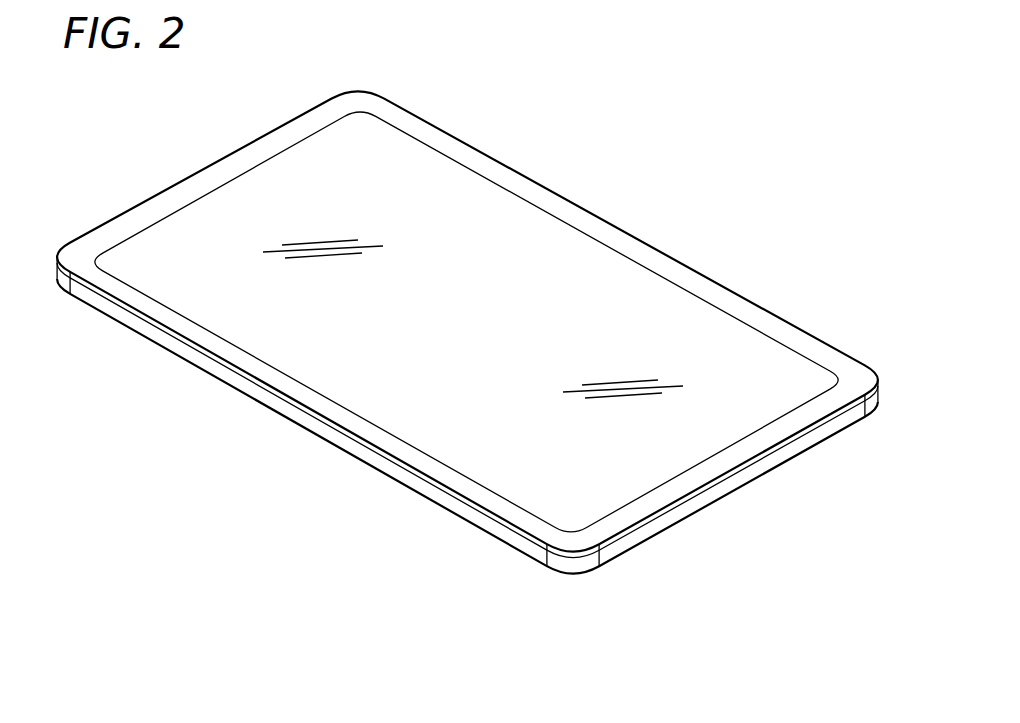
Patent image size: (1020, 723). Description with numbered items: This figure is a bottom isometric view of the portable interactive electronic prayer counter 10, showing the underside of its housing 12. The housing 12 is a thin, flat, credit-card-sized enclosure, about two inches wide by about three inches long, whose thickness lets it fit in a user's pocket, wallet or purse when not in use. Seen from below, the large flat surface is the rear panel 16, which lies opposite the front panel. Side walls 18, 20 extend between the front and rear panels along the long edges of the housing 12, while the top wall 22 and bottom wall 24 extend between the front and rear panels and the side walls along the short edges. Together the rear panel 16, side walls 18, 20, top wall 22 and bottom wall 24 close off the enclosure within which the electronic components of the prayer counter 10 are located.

The portable interactive electronic prayer counter 10 is at (640, 152).
The housing 12 is at (276, 412).
The rear panel 16 is at (422, 188).
The side wall 18 is at (678, 258).
The side wall 20 is at (357, 448).
The top wall 22 is at (128, 210).
The bottom wall 24 is at (733, 485).